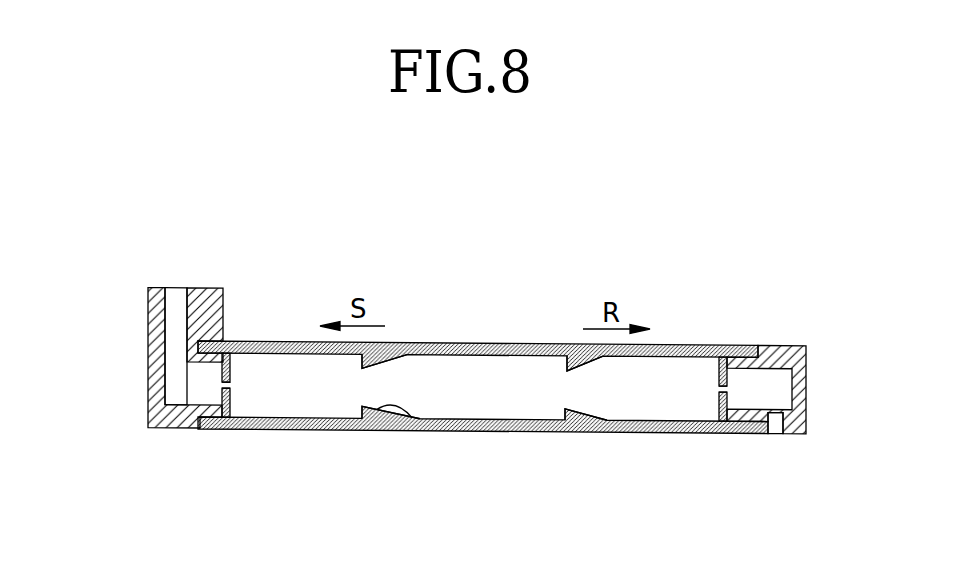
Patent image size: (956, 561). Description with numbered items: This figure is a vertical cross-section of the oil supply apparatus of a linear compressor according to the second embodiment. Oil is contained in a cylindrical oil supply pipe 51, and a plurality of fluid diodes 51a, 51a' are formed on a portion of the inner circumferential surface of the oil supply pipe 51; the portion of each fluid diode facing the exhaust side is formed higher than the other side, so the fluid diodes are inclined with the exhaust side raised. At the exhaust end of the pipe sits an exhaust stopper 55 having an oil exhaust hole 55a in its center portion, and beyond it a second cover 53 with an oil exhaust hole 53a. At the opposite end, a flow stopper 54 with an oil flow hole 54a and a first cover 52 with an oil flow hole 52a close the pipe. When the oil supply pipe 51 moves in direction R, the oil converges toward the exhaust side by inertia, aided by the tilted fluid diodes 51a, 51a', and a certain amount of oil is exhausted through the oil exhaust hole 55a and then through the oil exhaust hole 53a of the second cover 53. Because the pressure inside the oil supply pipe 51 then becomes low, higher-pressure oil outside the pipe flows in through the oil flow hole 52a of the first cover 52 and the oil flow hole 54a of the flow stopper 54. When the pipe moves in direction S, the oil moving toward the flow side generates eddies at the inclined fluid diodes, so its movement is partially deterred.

The oil supply pipe 51 is at (490, 343).
The fluid diode 51a is at (411, 426).
The fluid diode 51a' is at (564, 427).
The first cover 52 is at (783, 357).
The oil flow hole 52a is at (778, 425).
The second cover 53 is at (153, 405).
The oil exhaust hole 53a is at (170, 327).
The flow stopper 54 is at (723, 433).
The oil flow hole 54a is at (719, 389).
The exhaust stopper 55 is at (224, 422).
The oil exhaust hole 55a is at (231, 386).